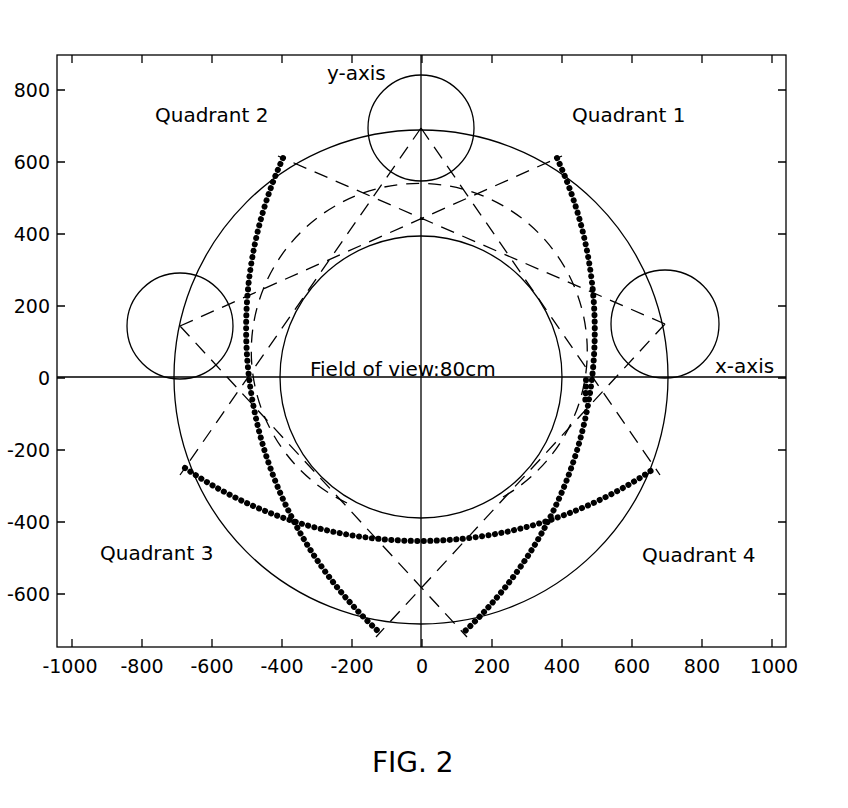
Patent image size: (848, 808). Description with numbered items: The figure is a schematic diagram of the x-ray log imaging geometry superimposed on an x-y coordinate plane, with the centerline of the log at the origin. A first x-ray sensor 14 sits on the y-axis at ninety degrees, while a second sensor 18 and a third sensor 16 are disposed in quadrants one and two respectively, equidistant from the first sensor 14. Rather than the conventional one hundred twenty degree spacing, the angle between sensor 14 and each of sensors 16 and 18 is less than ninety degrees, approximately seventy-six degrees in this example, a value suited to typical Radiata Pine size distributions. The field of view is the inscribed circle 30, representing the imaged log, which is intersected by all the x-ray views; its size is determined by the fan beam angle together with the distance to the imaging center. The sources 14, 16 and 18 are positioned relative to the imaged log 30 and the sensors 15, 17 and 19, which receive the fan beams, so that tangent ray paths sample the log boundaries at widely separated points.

The first x-ray sensor 14 is at (419, 128).
The sensor 15 is at (210, 487).
The third sensor 16 is at (180, 326).
The sensor 17 is at (587, 392).
The second sensor 18 is at (665, 324).
The sensor 19 is at (273, 457).
The field of view 30 is at (520, 478).